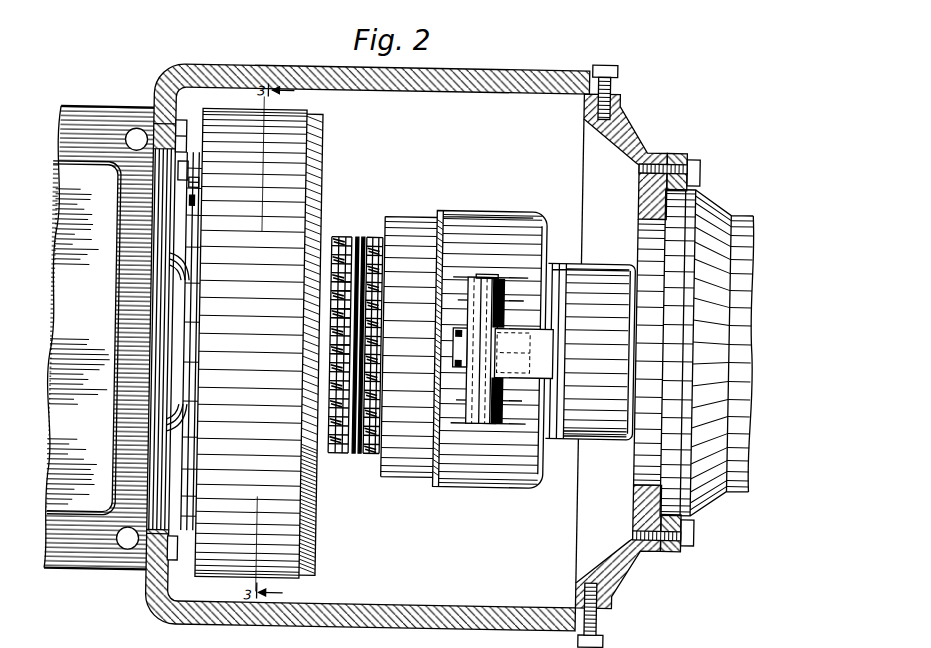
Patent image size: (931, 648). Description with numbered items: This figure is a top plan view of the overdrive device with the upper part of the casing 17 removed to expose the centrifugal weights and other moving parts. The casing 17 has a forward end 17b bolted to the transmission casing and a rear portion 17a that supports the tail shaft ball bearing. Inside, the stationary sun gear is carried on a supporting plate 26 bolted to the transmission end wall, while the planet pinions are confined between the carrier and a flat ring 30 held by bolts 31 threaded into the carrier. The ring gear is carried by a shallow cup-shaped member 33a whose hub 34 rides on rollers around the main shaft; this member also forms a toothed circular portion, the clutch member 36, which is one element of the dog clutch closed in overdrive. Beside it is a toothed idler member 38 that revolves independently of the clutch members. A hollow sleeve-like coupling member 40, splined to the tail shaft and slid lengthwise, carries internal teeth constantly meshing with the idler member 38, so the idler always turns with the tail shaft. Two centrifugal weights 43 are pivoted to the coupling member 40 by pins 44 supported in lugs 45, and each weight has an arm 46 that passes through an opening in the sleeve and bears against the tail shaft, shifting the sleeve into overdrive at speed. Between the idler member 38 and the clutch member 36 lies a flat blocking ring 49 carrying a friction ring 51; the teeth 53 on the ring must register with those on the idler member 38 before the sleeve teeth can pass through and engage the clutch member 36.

The casing 17 is at (459, 91).
The rear portion of the casing 17a is at (708, 226).
The forward end of the casing 17b is at (156, 91).
The supporting plate 26 is at (189, 272).
The flat ring 30 is at (195, 225).
The bolts 31 is at (194, 194).
The ring gear carrier member 33a is at (320, 550).
The hub 34 is at (327, 294).
The clutch member 36 is at (336, 265).
The toothed idler member 38 is at (371, 289).
The coupling member 40 is at (510, 489).
The centrifugal weights 43 is at (590, 300).
The pins 44 is at (484, 274).
The lugs 45 is at (494, 432).
The arm 46 is at (460, 347).
The flat disc or ring 49 is at (332, 347).
The friction ring 51 is at (327, 314).
The teeth on the ring 53 is at (359, 454).